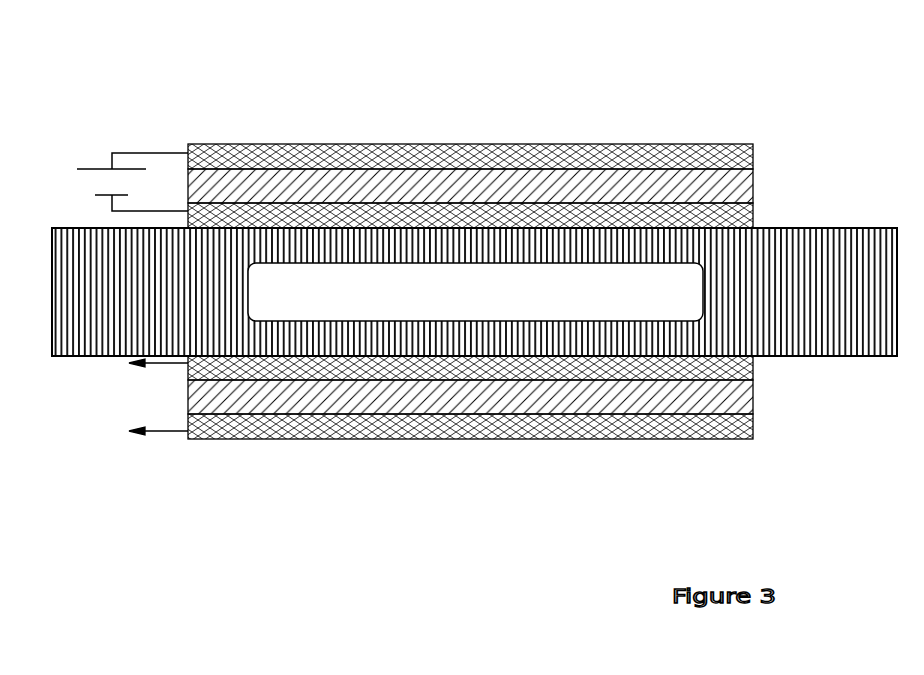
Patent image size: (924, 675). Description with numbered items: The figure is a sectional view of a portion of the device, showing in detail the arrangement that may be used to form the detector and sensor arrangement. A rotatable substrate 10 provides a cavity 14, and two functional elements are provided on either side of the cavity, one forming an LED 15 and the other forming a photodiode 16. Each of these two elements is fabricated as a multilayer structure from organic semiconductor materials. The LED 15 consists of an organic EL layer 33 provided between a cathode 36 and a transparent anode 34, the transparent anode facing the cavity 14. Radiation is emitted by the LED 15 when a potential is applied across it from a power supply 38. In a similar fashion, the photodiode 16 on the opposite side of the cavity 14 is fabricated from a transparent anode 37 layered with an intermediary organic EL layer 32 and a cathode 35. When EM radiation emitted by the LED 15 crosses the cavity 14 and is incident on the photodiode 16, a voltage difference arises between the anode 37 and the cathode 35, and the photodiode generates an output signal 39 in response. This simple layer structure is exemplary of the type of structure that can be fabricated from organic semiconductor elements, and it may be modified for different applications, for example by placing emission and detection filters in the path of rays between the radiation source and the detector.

The rotatable substrate 10 is at (368, 250).
The cavity 14 is at (545, 293).
The LED 15 is at (545, 135).
The photodiode 16 is at (550, 441).
The organic EL layer 32 is at (363, 403).
The organic EL layer 33 is at (552, 187).
The transparent anode 34 is at (755, 208).
The cathode 35 is at (753, 425).
The cathode 36 is at (753, 147).
The transparent anode 37 is at (753, 365).
The power supply 38 is at (154, 122).
The output signal 39 is at (163, 442).